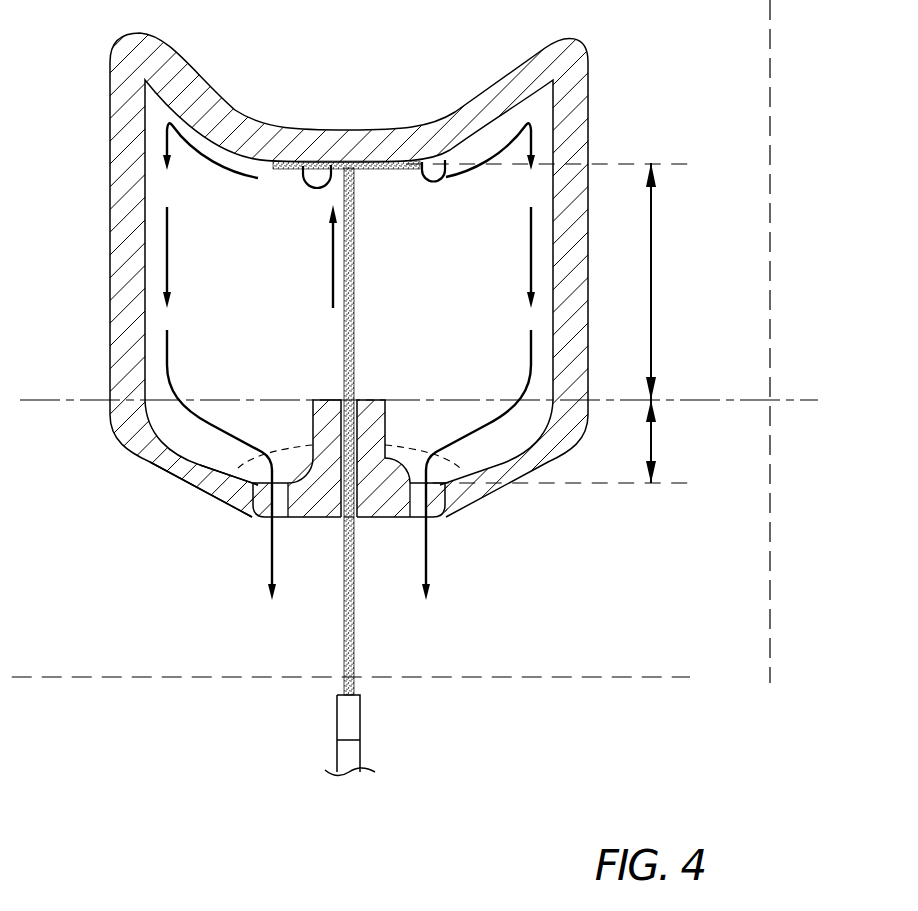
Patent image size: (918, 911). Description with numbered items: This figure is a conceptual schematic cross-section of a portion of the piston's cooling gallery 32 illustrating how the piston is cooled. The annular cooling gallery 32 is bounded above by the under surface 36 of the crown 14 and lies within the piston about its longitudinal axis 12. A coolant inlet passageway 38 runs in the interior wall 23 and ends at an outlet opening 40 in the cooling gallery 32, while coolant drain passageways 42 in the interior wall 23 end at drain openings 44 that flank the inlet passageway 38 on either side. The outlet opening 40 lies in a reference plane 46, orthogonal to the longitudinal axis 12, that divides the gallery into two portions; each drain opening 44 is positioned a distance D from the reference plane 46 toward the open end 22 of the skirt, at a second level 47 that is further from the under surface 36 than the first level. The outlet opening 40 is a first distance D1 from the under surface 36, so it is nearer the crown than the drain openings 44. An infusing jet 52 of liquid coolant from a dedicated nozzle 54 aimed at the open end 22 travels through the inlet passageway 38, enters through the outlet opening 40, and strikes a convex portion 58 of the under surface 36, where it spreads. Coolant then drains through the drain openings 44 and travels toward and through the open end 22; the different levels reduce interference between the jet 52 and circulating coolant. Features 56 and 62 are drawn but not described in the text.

The longitudinal axis 12 is at (768, 178).
The crown 14 is at (211, 90).
The open end 22 is at (183, 677).
The interior wall 23 is at (180, 453).
The cooling gallery 32 is at (215, 232).
The under surface 36 is at (445, 160).
The coolant inlet passageway 38 is at (357, 435).
The outlet opening 40 is at (357, 400).
The coolant drain passageway 42 is at (263, 502).
The drain opening 44 is at (280, 490).
The reference plane 46 is at (678, 400).
The second level 47 is at (595, 485).
The infusing jet 52 is at (353, 635).
The nozzle 54 is at (360, 718).
The flow arrows 56 is at (267, 550).
The convex portion 58 is at (331, 165).
The fillet 62 is at (263, 462).
The first distance D1 is at (665, 281).
The distance D is at (662, 441).